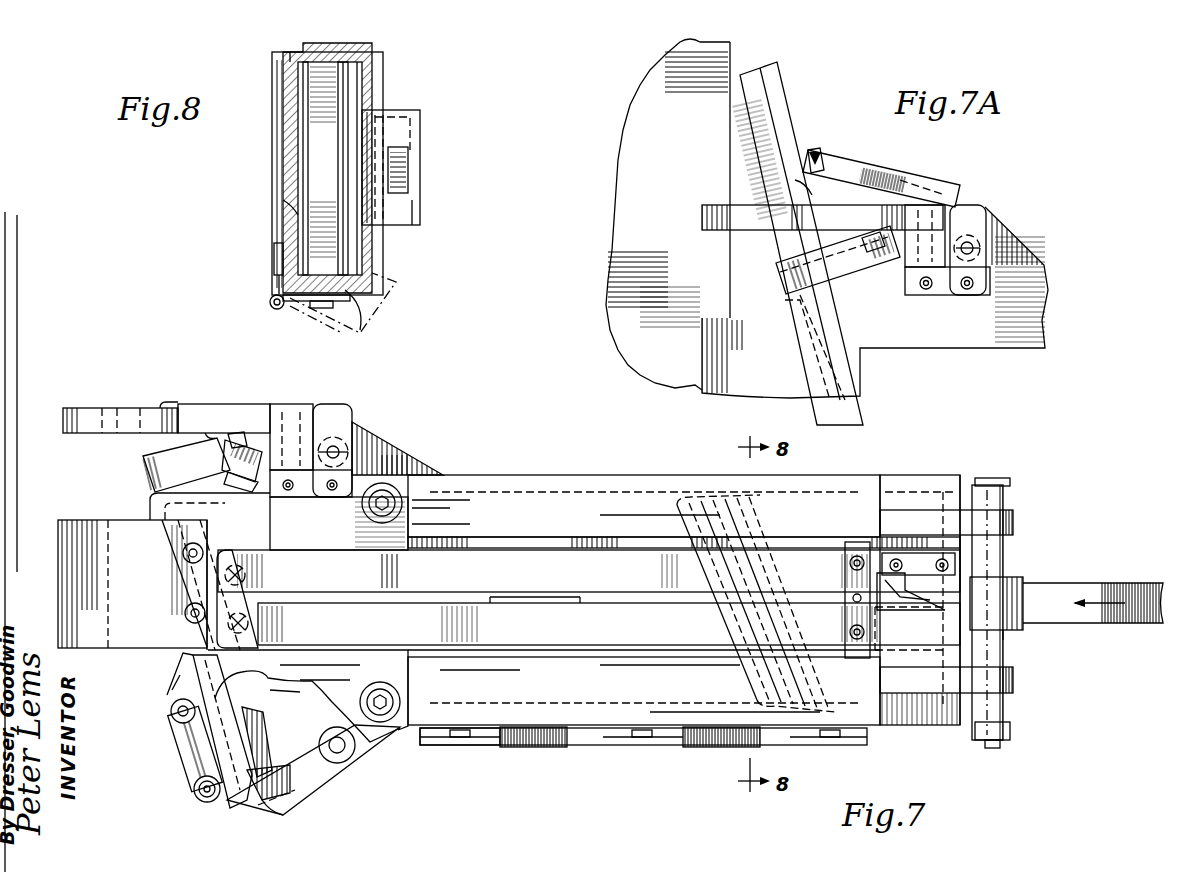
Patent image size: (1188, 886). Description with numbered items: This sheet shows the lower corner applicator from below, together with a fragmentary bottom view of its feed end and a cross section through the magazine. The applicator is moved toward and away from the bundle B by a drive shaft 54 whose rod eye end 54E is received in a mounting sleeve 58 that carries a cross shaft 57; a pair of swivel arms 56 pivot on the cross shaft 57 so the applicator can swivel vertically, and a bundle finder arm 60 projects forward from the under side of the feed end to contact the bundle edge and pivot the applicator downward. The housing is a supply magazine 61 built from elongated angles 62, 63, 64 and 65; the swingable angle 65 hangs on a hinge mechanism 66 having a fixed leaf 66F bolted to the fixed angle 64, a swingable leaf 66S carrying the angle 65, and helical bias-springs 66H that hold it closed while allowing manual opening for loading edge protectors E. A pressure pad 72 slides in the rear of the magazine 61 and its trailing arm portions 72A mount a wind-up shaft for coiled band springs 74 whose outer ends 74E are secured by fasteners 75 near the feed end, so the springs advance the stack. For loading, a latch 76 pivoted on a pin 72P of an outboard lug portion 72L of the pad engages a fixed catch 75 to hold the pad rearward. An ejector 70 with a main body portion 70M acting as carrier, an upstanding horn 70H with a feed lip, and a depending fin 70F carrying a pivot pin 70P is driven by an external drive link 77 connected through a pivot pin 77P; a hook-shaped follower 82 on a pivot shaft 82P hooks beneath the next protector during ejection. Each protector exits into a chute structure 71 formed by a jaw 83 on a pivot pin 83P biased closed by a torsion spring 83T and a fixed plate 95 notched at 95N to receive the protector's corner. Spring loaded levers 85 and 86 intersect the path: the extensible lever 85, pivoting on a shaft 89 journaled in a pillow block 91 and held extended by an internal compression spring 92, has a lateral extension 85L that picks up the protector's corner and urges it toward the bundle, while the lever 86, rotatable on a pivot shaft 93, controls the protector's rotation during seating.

In FIG. 7, the drive shaft 54 is at (1080, 598).
In FIG. 7, the rod eye end 54E is at (1018, 586).
In FIG. 7, the swivel arms 56 is at (985, 510).
In FIG. 7, the cross shaft 57 is at (1010, 484).
In FIG. 7, the mounting sleeve 58 is at (1008, 540).
In FIG. 7A, the bundle finder arm 60 is at (775, 382).
In FIG. 7, the bundle finder arm 60 is at (132, 527).
In FIG. 8, the supply magazine 61 is at (345, 92).
In FIG. 7, the supply magazine 61 is at (655, 546).
In FIG. 8, the elongated angle 62 is at (366, 44).
In FIG. 7, the elongated angle 62 is at (480, 521).
In FIG. 8, the elongated angle 63 is at (291, 50).
In FIG. 8, the fixed angle 64 is at (290, 238).
In FIG. 7, the fixed angle 64 is at (518, 654).
In FIG. 8, the swingable angle 65 is at (374, 275).
In FIG. 7, the swingable angle 65 is at (548, 694).
In FIG. 8, the hinge mechanism 66 is at (305, 303).
In FIG. 7, the hinge mechanism 66 is at (640, 748).
In FIG. 8, the fixed leaf 66F is at (280, 290).
In FIG. 7, the helical bias-springs 66H is at (553, 748).
In FIG. 8, the swingable leaf 66S is at (370, 320).
In FIG. 7, the swingable leaf 66S is at (487, 738).
In FIG. 7, the ejector 70 is at (233, 744).
In FIG. 7, the fin 70F is at (178, 688).
In FIG. 7, the horn 70H is at (277, 765).
In FIG. 7, the main body portion 70M is at (307, 706).
In FIG. 7, the pivot pin 70P is at (172, 718).
In FIG. 7A, the chute structure 71 is at (776, 278).
In FIG. 7, the chute structure 71 is at (144, 475).
In FIG. 8, the pressure pad 72 is at (330, 208).
In FIG. 7, the pressure pad 72 is at (890, 482).
In FIG. 7, the trailing arm portions 72A is at (948, 482).
In FIG. 8, the outboard lug portion 72L is at (418, 214).
In FIG. 7, the outboard lug portion 72L is at (845, 622).
In FIG. 7, the pin 72P is at (853, 596).
In FIG. 7, the coiled band springs 74 is at (1004, 636).
In FIG. 7, the outer ends 74E is at (293, 610).
In FIG. 8, the fasteners 75 is at (408, 110).
In FIG. 7, the fasteners 75 is at (245, 578).
In FIG. 8, the latch 76 is at (408, 170).
In FIG. 7, the latch 76 is at (925, 612).
In FIG. 7, the drive link 77 is at (192, 752).
In FIG. 7, the pivot pin 77P is at (200, 799).
In FIG. 7, the follower 82 is at (270, 808).
In FIG. 7, the pivot shaft 82P is at (340, 756).
In FIG. 7A, the jaw 83 is at (786, 292).
In FIG. 7, the jaw 83 is at (162, 458).
In FIG. 7A, the pivot pin 83P is at (874, 240).
In FIG. 7, the pivot pin 83P is at (238, 434).
In FIG. 7A, the torsion spring 83T is at (885, 280).
In FIG. 7, the torsion spring 83T is at (242, 488).
In FIG. 7A, the extensible lever 85 is at (836, 170).
In FIG. 7A, the lateral extension 85L is at (818, 152).
In FIG. 7A, the lever 86 is at (745, 225).
In FIG. 7, the lever 86 is at (128, 425).
In FIG. 7A, the shaft 89 is at (975, 262).
In FIG. 7, the shaft 89 is at (342, 450).
In FIG. 7A, the pillow block 91 is at (968, 215).
In FIG. 7, the pillow block 91 is at (332, 418).
In FIG. 7A, the compression spring 92 is at (906, 170).
In FIG. 7A, the pivot shaft 93 is at (940, 296).
In FIG. 7, the pivot shaft 93 is at (291, 404).
In FIG. 7A, the fixed plate 95 is at (795, 182).
In FIG. 7, the fixed plate 95 is at (216, 404).
In FIG. 7, the notch 95N is at (185, 394).
In FIG. 7A, the bed B is at (666, 158).
In FIG. 7A, the edge protector E is at (772, 115).
In FIG. 7, the edge protector E is at (705, 582).